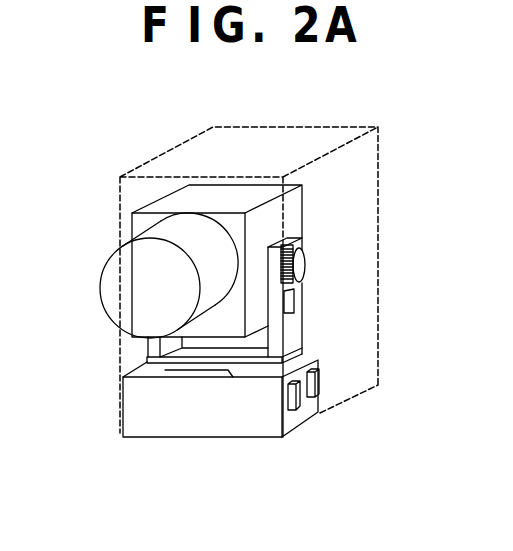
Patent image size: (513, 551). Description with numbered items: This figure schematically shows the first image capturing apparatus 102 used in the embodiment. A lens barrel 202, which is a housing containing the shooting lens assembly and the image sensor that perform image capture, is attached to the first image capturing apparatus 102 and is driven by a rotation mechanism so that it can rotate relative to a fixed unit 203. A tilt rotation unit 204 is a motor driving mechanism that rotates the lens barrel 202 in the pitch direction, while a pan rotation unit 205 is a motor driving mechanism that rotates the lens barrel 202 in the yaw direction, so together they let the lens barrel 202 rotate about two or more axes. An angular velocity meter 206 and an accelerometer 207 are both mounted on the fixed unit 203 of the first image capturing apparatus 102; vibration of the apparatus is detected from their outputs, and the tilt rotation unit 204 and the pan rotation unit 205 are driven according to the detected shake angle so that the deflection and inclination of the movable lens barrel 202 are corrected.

The first image capturing apparatus 102 is at (357, 124).
The lens barrel 202 is at (157, 200).
The fixed unit 203 is at (123, 408).
The tilt rotation unit 204 is at (305, 282).
The pan rotation unit 205 is at (203, 372).
The angular velocity meter 206 is at (320, 383).
The accelerometer 207 is at (322, 403).